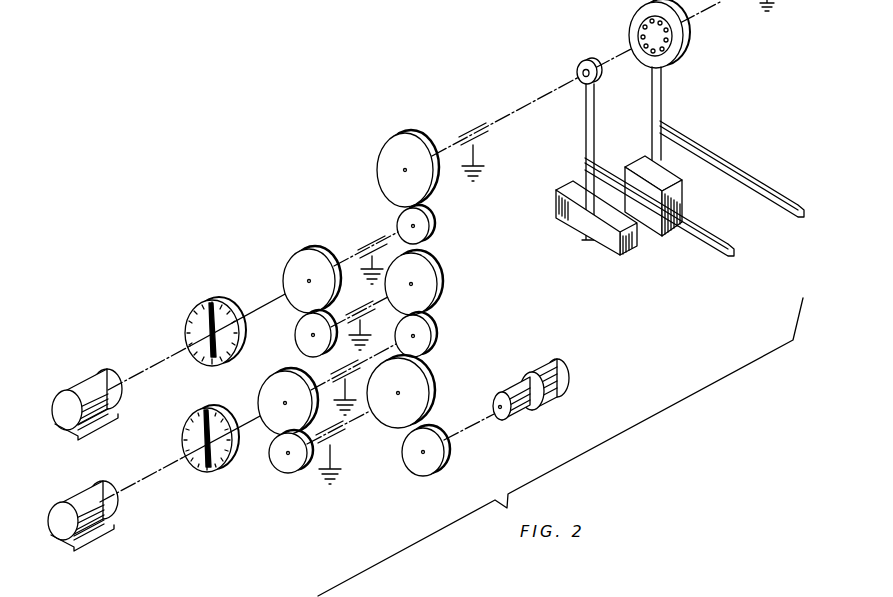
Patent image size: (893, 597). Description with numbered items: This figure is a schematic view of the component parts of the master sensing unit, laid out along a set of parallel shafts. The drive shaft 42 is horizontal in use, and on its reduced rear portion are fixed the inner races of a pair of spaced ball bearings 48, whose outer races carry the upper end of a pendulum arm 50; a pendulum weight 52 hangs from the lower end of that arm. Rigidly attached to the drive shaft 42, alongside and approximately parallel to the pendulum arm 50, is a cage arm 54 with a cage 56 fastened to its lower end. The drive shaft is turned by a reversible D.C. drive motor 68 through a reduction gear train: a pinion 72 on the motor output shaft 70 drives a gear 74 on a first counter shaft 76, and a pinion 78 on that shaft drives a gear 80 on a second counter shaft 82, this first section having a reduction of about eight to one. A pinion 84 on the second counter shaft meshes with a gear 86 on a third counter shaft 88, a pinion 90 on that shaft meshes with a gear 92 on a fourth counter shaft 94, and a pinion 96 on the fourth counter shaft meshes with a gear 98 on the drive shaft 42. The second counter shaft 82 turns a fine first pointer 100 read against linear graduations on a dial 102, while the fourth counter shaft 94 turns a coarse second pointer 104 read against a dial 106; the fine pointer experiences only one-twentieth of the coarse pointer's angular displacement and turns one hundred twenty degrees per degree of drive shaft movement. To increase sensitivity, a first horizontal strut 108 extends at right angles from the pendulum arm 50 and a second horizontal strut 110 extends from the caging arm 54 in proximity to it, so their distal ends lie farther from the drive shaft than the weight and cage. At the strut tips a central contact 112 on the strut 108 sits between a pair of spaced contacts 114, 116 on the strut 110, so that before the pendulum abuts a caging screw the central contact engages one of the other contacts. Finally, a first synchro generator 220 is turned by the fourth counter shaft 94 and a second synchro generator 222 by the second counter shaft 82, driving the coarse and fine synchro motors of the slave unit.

The drive shaft 42 is at (531, 97).
The ball bearings 48 is at (639, 23).
The pendulum arm 50 is at (661, 89).
The pendulum weight 52 is at (683, 200).
The cage arm 54 is at (584, 133).
The cage 56 is at (572, 220).
The reversible D.C. drive motor 68 is at (547, 372).
The output shaft 70 is at (483, 422).
The pinion 72 is at (434, 468).
The gear 74 is at (428, 380).
The first counter shaft 76 is at (378, 415).
The pinion 78 is at (294, 467).
The gear 80 is at (270, 380).
The second counter shaft 82 is at (384, 345).
The pinion 84 is at (432, 333).
The gear 86 is at (437, 280).
The third counter shaft 88 is at (386, 300).
The pinion 90 is at (315, 348).
The gear 92 is at (311, 252).
The fourth counter shaft 94 is at (273, 312).
The pinion 96 is at (426, 232).
The gear 98 is at (402, 142).
The first pointer 100 is at (210, 472).
The dial 102 is at (230, 423).
The second pointer 104 is at (207, 322).
The dial 106 is at (208, 362).
The first horizontal strut 108 is at (741, 170).
The second horizontal strut 110 is at (716, 236).
The central contact 112 is at (783, 225).
The contact 114 is at (757, 247).
The contact 116 is at (745, 268).
The first synchro generator 220 is at (82, 387).
The second synchro generator 222 is at (108, 507).